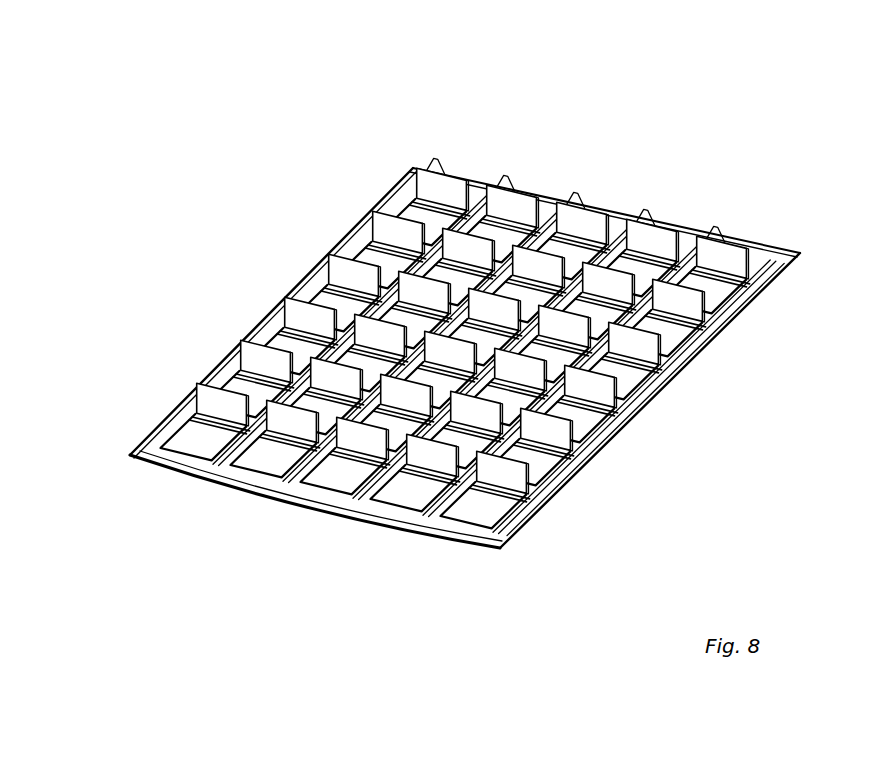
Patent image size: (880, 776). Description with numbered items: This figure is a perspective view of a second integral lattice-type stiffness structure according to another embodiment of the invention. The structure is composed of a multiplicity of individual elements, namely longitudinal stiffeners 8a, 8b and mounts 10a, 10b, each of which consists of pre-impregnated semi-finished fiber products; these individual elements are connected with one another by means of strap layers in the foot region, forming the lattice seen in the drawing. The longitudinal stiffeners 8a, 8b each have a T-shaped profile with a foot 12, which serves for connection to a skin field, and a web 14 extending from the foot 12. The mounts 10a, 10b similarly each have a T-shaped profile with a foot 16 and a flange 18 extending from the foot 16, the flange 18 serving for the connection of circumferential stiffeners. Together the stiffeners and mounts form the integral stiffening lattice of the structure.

The longitudinal stiffener 8a is at (413, 170).
The longitudinal stiffener 8b is at (480, 193).
The mount 10a is at (237, 347).
The mount 10b is at (283, 302).
The foot 12 is at (504, 543).
The web 14 is at (490, 545).
The foot 16 is at (232, 425).
The flange 18 is at (199, 403).